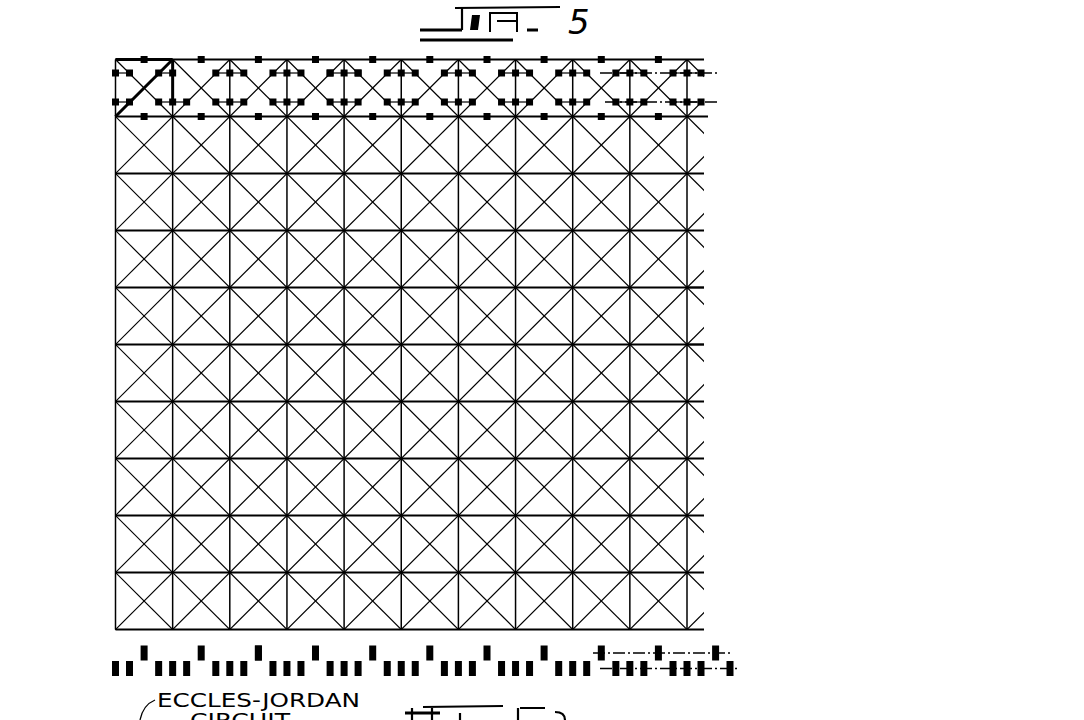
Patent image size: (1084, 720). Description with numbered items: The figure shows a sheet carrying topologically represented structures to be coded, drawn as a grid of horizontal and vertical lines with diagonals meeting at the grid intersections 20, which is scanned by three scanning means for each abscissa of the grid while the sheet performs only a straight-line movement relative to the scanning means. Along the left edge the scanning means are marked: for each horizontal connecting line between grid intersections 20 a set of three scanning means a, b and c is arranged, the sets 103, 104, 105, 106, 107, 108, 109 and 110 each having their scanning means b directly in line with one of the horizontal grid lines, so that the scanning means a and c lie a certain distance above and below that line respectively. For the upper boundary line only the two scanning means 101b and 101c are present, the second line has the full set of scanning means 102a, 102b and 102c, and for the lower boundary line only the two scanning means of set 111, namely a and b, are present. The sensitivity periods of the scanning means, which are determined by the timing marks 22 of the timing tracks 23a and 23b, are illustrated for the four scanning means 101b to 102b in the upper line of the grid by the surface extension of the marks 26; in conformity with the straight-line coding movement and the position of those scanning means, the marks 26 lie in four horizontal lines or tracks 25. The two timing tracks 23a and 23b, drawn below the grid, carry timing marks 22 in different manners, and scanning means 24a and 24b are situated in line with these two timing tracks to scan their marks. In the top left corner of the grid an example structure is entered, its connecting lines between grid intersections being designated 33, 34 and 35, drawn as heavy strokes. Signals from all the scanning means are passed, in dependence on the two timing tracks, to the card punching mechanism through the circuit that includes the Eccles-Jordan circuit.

The grid intersections 20 is at (691, 344).
The timing marks 22 is at (262, 659).
The timing track 23a is at (657, 655).
The timing track 23b is at (720, 669).
The scanning means 24a is at (380, 654).
The scanning means 24b is at (389, 670).
The tracks 25 is at (711, 73).
The marks 26 is at (358, 71).
The connecting line 33 is at (129, 58).
The connecting line 34 is at (176, 82).
The connecting line 35 is at (146, 88).
The scanning means 101b is at (371, 60).
The scanning means 101c is at (372, 74).
The scanning means 102a is at (371, 100).
The scanning means 102b is at (373, 115).
The scanning means 102c is at (76, 130).
The set of scanning means 103 is at (100, 156).
The set of scanning means 104 is at (100, 214).
The set of scanning means 105 is at (100, 270).
The set of scanning means 106 is at (100, 328).
The set of scanning means 107 is at (100, 384).
The set of scanning means 108 is at (100, 442).
The set of scanning means 109 is at (100, 498).
The set of scanning means 110 is at (100, 556).
The set of scanning means 111 is at (100, 612).